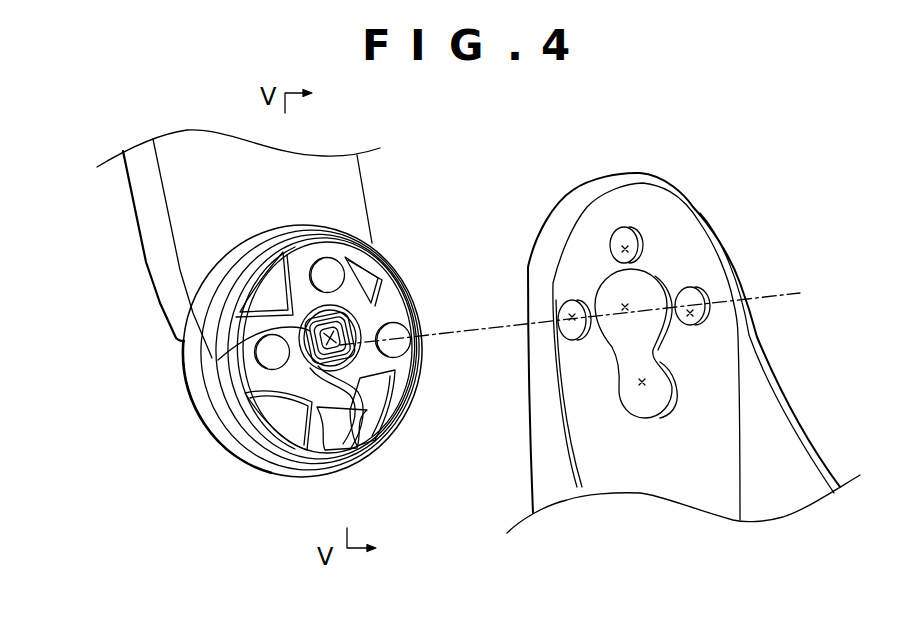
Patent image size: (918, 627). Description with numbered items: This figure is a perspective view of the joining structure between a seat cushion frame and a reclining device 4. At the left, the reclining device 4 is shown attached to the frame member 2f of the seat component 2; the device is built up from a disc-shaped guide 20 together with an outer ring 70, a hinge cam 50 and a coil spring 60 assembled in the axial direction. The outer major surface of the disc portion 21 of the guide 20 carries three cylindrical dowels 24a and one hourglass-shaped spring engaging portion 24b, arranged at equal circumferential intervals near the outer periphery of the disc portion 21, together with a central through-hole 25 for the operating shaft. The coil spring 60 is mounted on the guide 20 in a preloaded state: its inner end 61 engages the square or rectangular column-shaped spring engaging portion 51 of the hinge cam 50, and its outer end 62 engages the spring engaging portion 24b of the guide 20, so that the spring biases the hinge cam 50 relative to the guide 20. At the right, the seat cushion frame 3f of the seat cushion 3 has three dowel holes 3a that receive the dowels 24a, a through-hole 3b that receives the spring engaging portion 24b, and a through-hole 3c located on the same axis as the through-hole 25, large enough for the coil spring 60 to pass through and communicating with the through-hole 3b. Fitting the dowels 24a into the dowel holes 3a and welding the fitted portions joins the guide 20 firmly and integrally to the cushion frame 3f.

The handle 2 is at (238, 225).
The handle end face 2f is at (180, 160).
The reclining device 4 is at (379, 229).
The outer ring 70 is at (251, 252).
The guide 20 is at (396, 372).
The disc portion 21 is at (396, 405).
The dowels 24a is at (329, 276).
The spring engaging portion 24b is at (355, 443).
The through-hole 25 is at (362, 334).
The coil spring 60 is at (342, 305).
The inner end 61 is at (350, 318).
The outer end 62 is at (368, 432).
The hinge cam 50 is at (184, 349).
The spring engaging portion 51 is at (222, 356).
The panel 3 is at (683, 341).
The seat cushion frame 3f is at (672, 227).
The dowel holes 3a is at (573, 300).
The through-hole 3c is at (625, 306).
The through-hole 3b is at (645, 383).